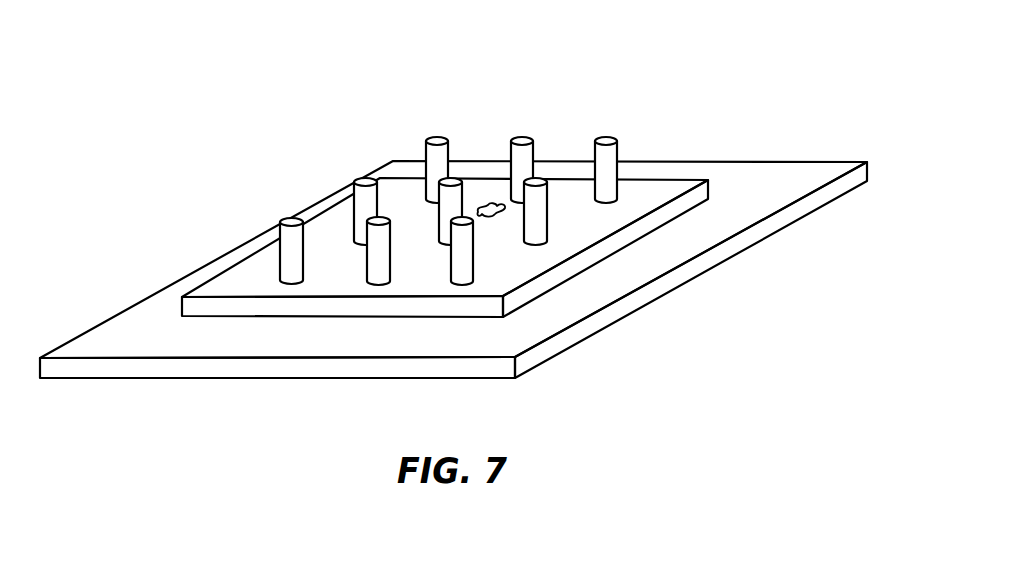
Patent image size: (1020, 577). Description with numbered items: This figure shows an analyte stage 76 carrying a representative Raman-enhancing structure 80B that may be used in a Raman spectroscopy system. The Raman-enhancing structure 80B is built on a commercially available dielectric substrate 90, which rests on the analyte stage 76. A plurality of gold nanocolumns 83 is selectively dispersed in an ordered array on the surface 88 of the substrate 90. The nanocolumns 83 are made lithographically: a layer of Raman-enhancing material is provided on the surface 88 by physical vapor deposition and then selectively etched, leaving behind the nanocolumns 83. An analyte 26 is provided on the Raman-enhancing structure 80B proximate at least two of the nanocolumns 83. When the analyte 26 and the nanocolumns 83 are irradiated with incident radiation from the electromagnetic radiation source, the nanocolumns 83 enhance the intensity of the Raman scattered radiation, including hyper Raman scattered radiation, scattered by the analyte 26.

The analyte stage 76 is at (123, 333).
The Raman-enhancing structure 80B is at (471, 186).
The surface 88 is at (426, 244).
The substrate 90 is at (193, 310).
The gold nanocolumns 83 is at (523, 160).
The analyte 26 is at (495, 205).